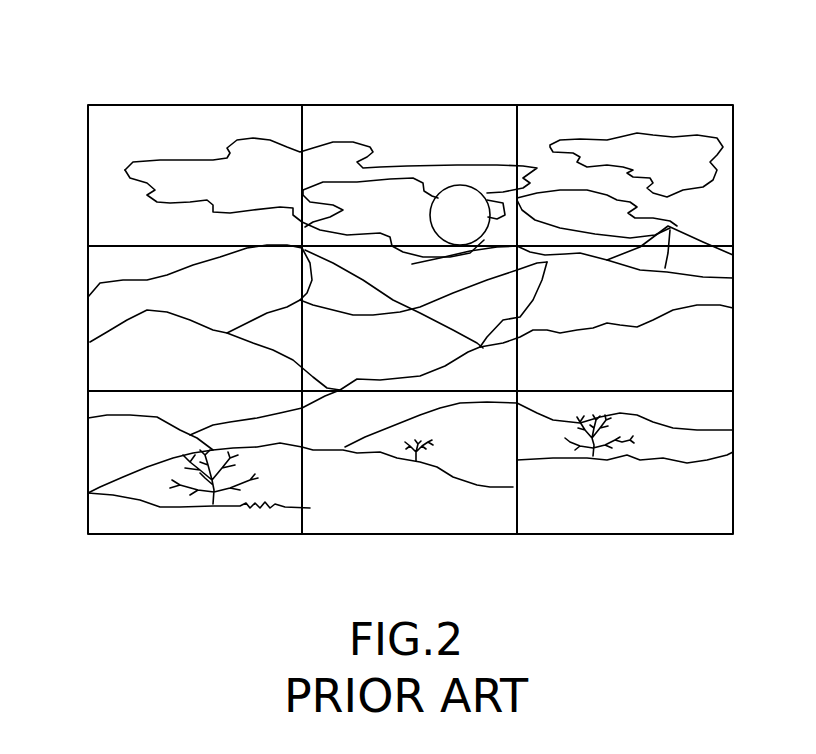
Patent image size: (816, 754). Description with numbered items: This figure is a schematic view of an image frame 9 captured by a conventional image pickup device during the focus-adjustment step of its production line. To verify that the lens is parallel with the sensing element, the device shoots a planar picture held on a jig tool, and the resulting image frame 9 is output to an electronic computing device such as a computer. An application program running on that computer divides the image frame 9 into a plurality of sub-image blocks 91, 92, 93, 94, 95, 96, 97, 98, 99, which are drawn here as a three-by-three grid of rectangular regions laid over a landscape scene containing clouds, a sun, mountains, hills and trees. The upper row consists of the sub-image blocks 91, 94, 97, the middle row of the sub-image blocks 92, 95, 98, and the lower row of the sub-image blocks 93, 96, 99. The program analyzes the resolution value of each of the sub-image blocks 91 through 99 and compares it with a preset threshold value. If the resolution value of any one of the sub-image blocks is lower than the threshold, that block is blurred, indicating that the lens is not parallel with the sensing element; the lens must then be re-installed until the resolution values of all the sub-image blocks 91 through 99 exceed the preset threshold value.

The image frame 9 is at (588, 74).
The sub-image block 91 is at (223, 118).
The sub-image block 92 is at (97, 327).
The sub-image block 93 is at (98, 466).
The sub-image block 94 is at (437, 118).
The sub-image block 95 is at (402, 358).
The sub-image block 96 is at (448, 520).
The sub-image block 97 is at (653, 118).
The sub-image block 98 is at (713, 357).
The sub-image block 99 is at (713, 512).